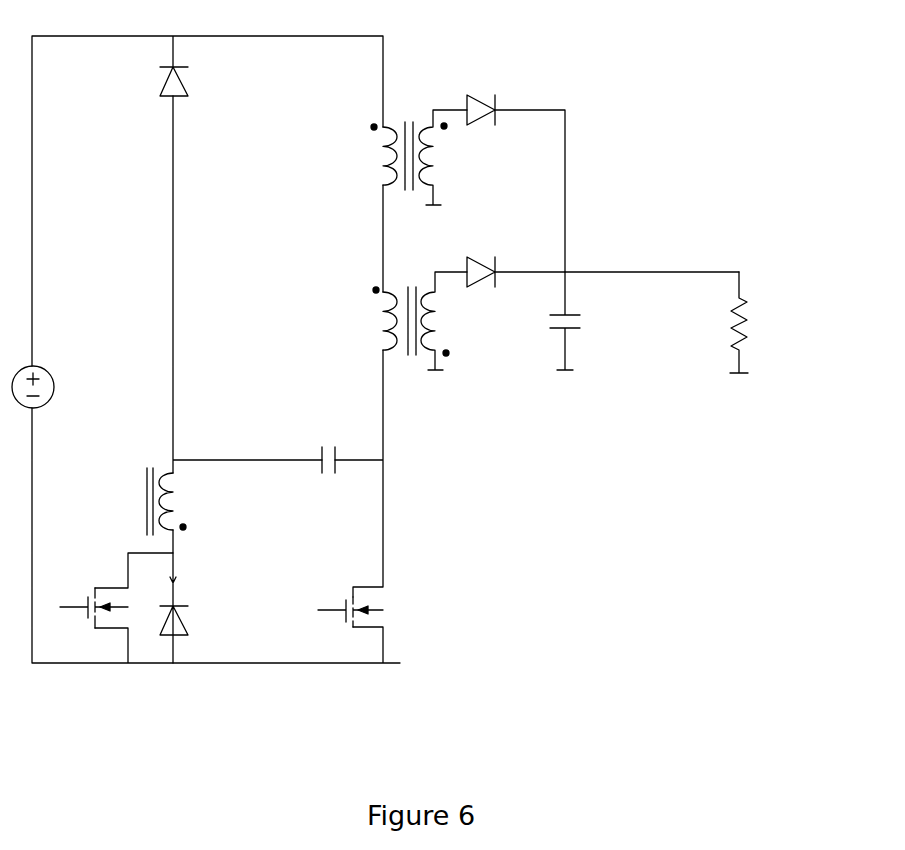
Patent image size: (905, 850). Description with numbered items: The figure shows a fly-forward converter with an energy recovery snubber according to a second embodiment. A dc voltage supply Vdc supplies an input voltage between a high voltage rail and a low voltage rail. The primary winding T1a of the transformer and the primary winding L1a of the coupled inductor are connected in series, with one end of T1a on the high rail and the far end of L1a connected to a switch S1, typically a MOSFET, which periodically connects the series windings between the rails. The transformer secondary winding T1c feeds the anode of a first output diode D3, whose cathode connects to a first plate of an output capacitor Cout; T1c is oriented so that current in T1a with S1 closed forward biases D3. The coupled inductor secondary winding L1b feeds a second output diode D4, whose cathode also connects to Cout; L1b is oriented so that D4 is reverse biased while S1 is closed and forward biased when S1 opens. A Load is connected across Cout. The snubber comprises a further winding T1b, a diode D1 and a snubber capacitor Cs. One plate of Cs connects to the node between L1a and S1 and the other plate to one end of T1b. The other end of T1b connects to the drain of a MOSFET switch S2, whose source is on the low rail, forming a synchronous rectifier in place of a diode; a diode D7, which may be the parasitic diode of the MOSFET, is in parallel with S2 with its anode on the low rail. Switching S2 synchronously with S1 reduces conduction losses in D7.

The dc voltage supply Vdc is at (62, 373).
The diode D1 is at (204, 86).
The snubber capacitor Cs is at (314, 443).
The primary winding T1a is at (361, 156).
The further winding T1b is at (202, 501).
The secondary winding T1c is at (457, 157).
The first output diode D3 is at (516, 163).
The second output diode D4 is at (599, 257).
The diode D7 is at (168, 629).
The primary winding L1a is at (363, 321).
The secondary winding L1b is at (456, 321).
The output capacitor Cout is at (605, 321).
The load Load is at (751, 304).
The switch S1 is at (381, 610).
The MOSFET switch S2 is at (94, 655).